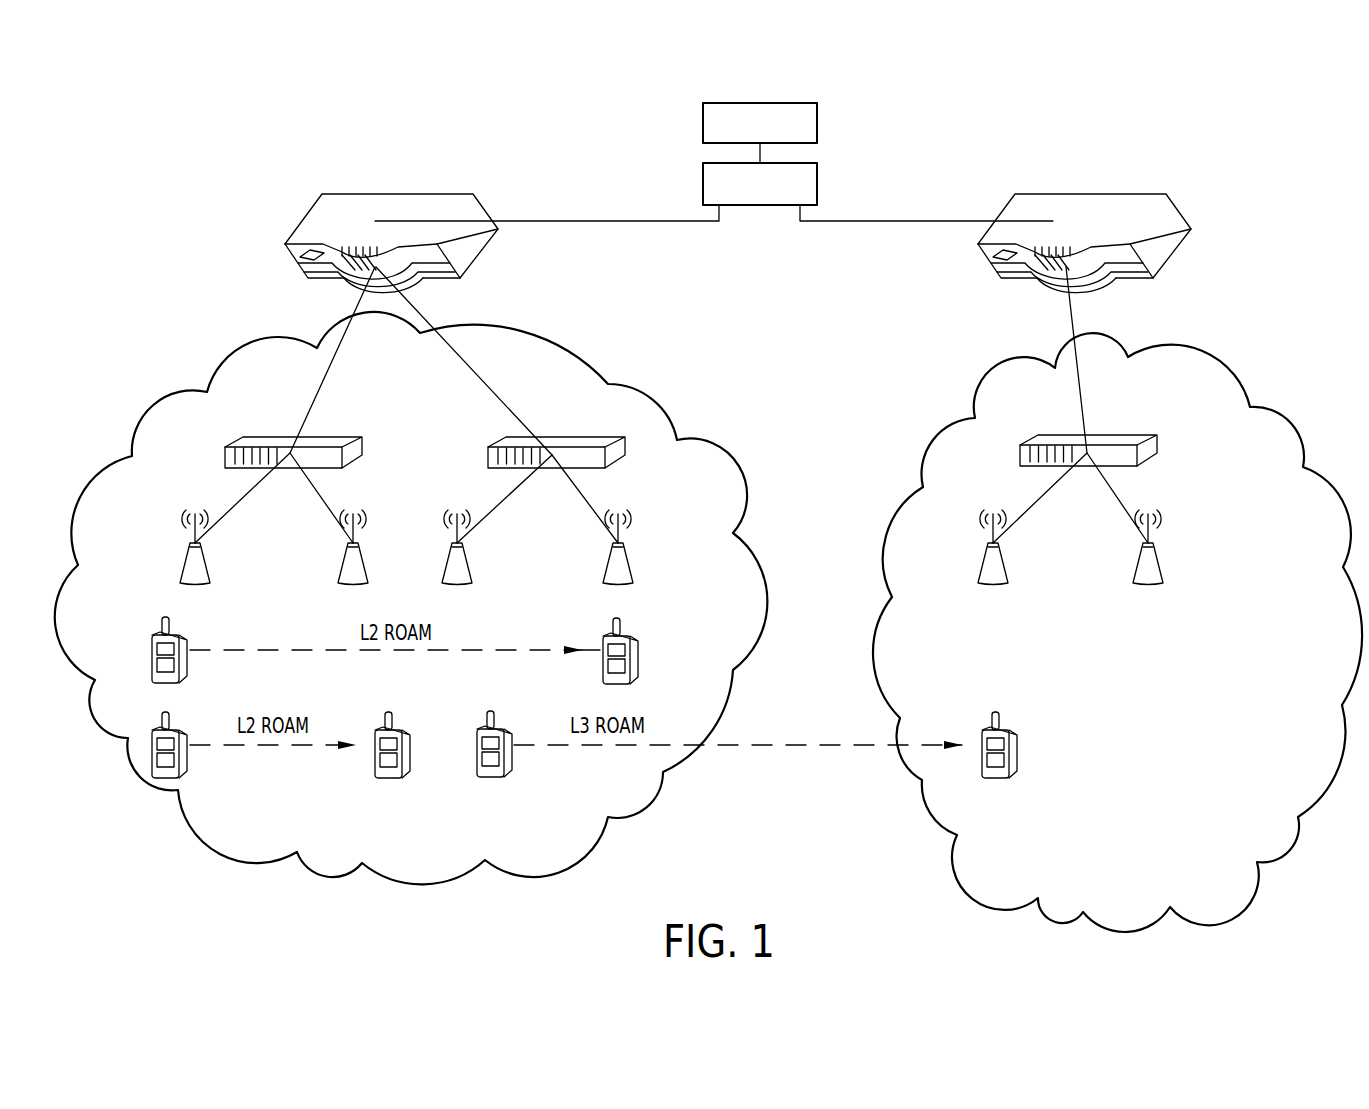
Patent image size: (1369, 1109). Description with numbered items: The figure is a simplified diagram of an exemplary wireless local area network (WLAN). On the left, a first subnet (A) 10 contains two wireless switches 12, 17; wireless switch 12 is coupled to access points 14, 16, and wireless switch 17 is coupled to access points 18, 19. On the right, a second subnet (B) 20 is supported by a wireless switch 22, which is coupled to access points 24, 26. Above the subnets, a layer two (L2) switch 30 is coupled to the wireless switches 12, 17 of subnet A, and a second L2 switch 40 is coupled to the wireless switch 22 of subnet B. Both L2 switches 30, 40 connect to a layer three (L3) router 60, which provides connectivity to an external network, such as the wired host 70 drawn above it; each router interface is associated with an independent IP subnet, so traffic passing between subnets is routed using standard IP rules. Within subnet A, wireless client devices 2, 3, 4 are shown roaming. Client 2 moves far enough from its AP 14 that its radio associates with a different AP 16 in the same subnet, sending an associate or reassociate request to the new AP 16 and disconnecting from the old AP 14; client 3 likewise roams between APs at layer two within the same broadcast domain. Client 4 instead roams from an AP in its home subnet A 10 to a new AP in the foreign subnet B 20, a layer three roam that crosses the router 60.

The wireless client device 2 is at (190, 767).
The wireless client device 3 is at (190, 670).
The wireless client device 4 is at (517, 765).
The first subnet (A) 10 is at (87, 705).
The wireless switch 12 is at (362, 452).
The access point 14 is at (210, 577).
The access point 16 is at (368, 577).
The wireless switch 17 is at (623, 455).
The access point 18 is at (473, 578).
The access point 19 is at (637, 578).
The second subnet (B) 20 is at (960, 865).
The wireless switch 22 is at (1160, 450).
The access point 24 is at (1008, 577).
The access point 26 is at (1163, 577).
The layer 2 (L2) switch 30 is at (297, 223).
The layer 2 (L2) switch 40 is at (1177, 252).
The layer 3 (L3) router 60 is at (818, 181).
The wired host 70 is at (818, 123).